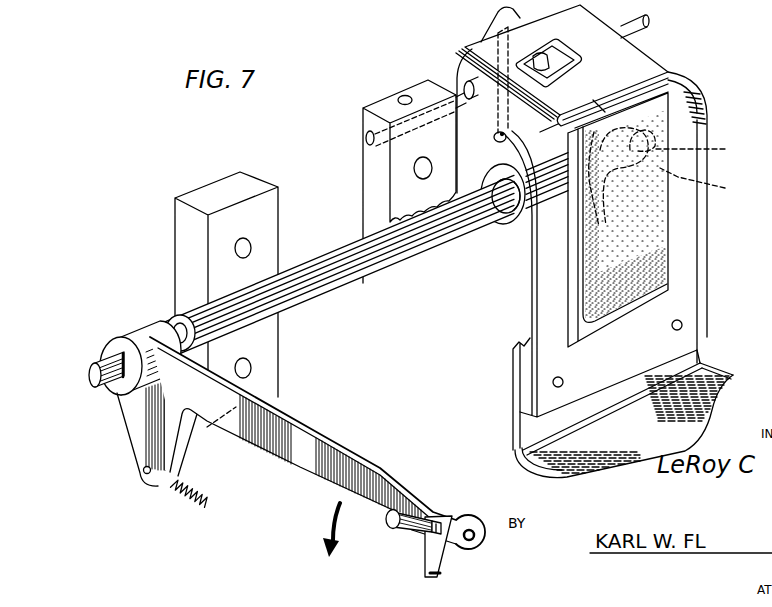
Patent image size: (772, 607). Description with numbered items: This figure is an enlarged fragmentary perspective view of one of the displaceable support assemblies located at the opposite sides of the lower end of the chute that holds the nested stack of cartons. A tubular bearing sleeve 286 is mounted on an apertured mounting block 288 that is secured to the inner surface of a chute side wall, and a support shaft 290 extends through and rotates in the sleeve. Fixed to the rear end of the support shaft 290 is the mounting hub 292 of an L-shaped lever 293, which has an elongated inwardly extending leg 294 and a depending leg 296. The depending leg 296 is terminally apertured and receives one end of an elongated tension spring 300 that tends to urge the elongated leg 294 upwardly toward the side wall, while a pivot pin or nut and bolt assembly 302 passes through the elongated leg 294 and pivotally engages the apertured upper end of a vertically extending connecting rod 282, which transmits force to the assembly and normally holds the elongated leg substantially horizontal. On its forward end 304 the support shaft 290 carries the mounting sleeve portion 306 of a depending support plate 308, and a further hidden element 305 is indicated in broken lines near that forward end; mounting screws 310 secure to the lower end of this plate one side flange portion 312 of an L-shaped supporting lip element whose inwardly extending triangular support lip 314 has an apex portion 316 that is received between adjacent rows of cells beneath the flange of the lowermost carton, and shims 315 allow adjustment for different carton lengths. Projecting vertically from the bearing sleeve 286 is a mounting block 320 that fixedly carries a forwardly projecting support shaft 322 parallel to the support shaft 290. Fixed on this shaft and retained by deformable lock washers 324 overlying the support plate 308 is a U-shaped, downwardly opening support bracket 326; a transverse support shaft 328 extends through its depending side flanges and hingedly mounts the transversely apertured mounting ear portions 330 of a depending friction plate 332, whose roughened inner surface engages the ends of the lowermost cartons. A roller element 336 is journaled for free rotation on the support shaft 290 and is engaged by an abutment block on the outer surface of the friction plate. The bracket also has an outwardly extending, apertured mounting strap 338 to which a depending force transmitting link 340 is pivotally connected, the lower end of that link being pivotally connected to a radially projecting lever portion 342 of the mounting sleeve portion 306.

The connecting rod 282 is at (425, 572).
The bearing sleeve 286 is at (325, 255).
The mounting block 288 is at (176, 231).
The support shaft 290 is at (94, 364).
The mounting hub 292 is at (165, 326).
The L-shaped lever 293 is at (289, 401).
The elongated leg 294 is at (322, 437).
The depending leg 296 is at (138, 445).
The tension spring 300 is at (191, 484).
The pivot pin 302 is at (408, 530).
The forward end of shaft 304 is at (692, 144).
The spring 305 is at (707, 182).
The mounting sleeve portion 306 is at (507, 226).
The support plate 308 is at (704, 172).
The mounting screws 310 is at (672, 325).
The side flange portion 312 is at (699, 353).
The support lip 314 is at (714, 378).
The shims 315 is at (522, 338).
The apex portion 316 is at (690, 440).
The mounting block 320 is at (362, 160).
The support shaft 322 is at (648, 34).
The lock washers 324 is at (466, 80).
The support bracket 326 is at (640, 58).
The transverse support shaft 328 is at (580, 124).
The mounting ear portions 330 is at (579, 62).
The friction plate 332 is at (660, 220).
The roller element 336 is at (619, 186).
The mounting strap 338 is at (496, 22).
The force transmitting link 340 is at (492, 34).
The lever portion 342 is at (497, 143).